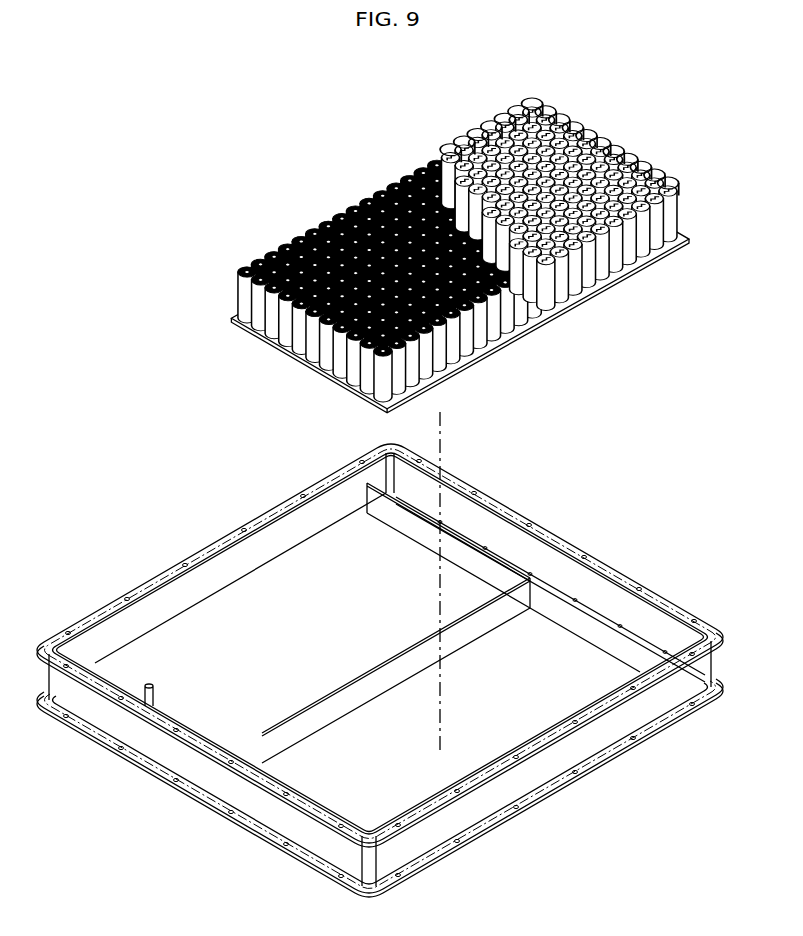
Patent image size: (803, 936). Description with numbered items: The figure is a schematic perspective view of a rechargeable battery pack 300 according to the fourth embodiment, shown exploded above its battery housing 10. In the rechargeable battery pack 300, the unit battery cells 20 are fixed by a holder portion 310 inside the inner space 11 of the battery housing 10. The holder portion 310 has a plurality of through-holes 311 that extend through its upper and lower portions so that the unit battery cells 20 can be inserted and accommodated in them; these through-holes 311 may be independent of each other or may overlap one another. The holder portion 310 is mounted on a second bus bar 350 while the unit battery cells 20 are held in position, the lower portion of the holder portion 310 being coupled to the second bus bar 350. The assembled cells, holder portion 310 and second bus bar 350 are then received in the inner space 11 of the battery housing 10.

The rechargeable battery pack 300 is at (122, 254).
The second bus bar 350 is at (632, 266).
The unit battery cells 20 is at (288, 248).
The holder portion 310 is at (585, 285).
The through-holes 311 is at (537, 135).
The battery housing 10 is at (585, 748).
The inner space 11 is at (174, 655).